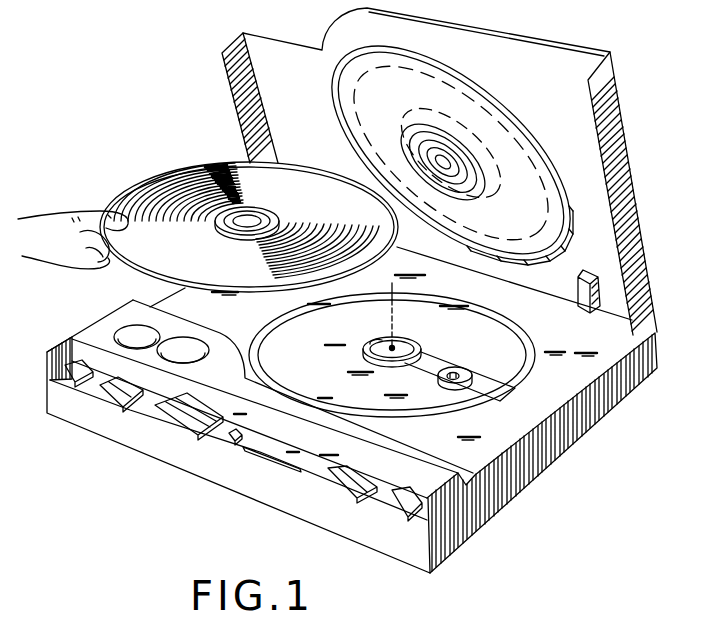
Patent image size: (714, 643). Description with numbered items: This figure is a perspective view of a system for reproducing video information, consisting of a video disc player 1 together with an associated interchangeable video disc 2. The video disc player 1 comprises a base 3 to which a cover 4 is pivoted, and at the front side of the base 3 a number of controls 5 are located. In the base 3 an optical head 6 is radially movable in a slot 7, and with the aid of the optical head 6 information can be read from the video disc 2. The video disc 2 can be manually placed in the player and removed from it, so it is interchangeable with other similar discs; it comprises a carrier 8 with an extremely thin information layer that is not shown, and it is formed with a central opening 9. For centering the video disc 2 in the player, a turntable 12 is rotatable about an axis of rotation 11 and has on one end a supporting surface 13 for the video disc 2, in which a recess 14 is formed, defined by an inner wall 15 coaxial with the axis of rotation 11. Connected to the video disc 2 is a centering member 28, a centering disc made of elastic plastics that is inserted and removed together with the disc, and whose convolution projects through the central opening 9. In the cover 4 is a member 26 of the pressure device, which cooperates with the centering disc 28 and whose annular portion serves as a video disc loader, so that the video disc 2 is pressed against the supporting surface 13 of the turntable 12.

The video disc player 1 is at (176, 483).
The video disc 2 is at (133, 171).
The base 3 is at (580, 413).
The cover 4 is at (635, 212).
The controls 5 is at (190, 425).
The optical head 6 is at (466, 368).
The slot 7 is at (488, 392).
The carrier 8 is at (192, 173).
The central opening 9 is at (273, 210).
The axis of rotation 11 is at (398, 304).
The turntable 12 is at (362, 356).
The supporting surface 13 is at (376, 340).
The recess 14 is at (389, 362).
The inner wall 15 is at (394, 333).
The member 26 is at (463, 186).
The centering member 28 is at (271, 195).